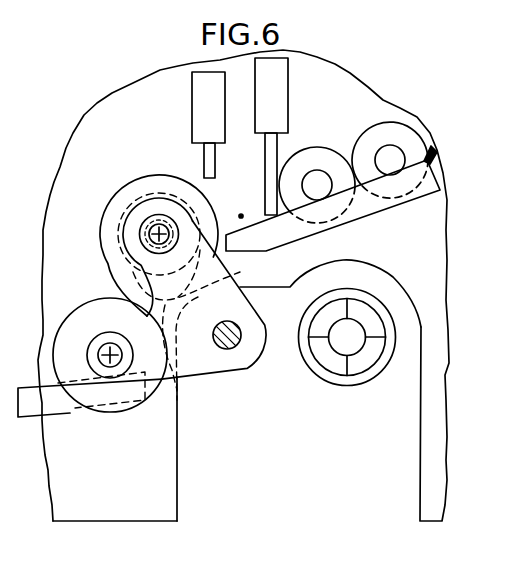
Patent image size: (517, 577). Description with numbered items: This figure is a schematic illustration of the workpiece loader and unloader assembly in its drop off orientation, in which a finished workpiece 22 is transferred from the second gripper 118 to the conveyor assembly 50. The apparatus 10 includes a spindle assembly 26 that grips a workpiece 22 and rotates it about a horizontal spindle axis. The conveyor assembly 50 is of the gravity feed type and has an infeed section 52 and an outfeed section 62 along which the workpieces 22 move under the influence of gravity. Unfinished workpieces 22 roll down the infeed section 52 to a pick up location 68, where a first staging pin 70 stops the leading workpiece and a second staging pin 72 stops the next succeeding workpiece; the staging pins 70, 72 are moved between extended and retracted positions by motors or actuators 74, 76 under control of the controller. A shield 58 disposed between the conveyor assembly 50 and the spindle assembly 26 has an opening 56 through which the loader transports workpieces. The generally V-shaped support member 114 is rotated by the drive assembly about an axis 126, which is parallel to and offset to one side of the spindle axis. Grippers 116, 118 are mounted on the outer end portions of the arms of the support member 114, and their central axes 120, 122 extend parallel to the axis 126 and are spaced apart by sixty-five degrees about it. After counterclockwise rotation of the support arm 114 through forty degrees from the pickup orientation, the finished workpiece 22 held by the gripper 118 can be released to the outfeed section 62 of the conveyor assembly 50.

The housing 10 is at (224, 285).
The workpieces 22 is at (372, 140).
The spindle assembly 26 is at (360, 360).
The conveyor assembly 50 is at (430, 147).
The infeed section 52 is at (373, 208).
The opening 56 is at (177, 470).
The shield 58 is at (102, 510).
The outfeed section 62 is at (50, 402).
The pick up location 68 is at (241, 216).
The first staging pin 70 is at (208, 162).
The second staging pin 72 is at (278, 148).
The motor or actuator 74 is at (202, 89).
The motor or actuator 76 is at (278, 83).
The support member 114 is at (193, 366).
The gripper 116 is at (134, 194).
The gripper 118 is at (92, 314).
The central axis 120 is at (150, 234).
The central axis 122 is at (100, 356).
The axis 126 is at (230, 337).